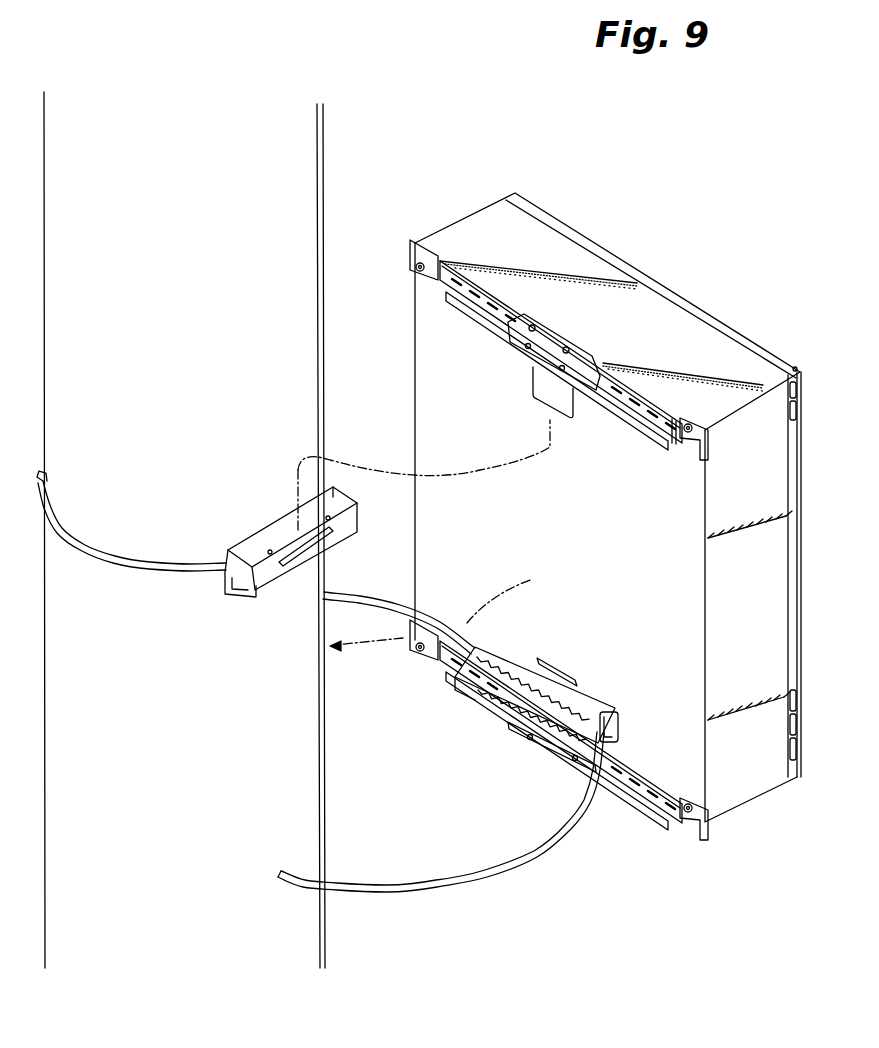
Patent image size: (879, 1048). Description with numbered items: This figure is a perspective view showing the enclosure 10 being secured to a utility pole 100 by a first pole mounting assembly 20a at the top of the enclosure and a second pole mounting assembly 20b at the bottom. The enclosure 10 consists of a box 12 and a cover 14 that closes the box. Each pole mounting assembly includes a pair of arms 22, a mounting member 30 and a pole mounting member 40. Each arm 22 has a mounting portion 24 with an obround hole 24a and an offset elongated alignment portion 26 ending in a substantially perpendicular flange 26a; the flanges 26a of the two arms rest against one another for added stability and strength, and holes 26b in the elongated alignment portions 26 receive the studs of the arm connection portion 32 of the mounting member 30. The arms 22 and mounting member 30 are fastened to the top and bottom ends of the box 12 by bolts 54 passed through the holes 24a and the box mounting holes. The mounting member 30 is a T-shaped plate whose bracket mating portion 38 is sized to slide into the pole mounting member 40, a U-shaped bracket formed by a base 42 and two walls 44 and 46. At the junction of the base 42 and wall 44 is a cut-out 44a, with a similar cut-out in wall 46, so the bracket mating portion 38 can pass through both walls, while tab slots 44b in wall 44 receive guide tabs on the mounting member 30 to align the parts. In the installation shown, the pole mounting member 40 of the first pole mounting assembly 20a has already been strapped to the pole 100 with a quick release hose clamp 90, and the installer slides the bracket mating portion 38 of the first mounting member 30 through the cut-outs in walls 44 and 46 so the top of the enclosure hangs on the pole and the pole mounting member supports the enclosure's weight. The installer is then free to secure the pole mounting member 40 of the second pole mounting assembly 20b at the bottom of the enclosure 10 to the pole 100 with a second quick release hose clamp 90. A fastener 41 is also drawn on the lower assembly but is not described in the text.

The enclosure 10 is at (682, 238).
The box 12 is at (483, 214).
The cover 14 is at (620, 260).
The first pole mounting assembly 20a is at (478, 352).
The second pole mounting assembly 20b is at (624, 642).
The arm 22 is at (510, 285).
The mounting portion 24 is at (411, 242).
The hole 24a is at (692, 447).
The elongated alignment portion 26 is at (520, 315).
The flange 26a is at (447, 297).
The holes 26b is at (488, 300).
The mounting member 30 is at (563, 428).
The arm connection portion 32 is at (555, 340).
The bracket mating portion 38 is at (545, 398).
The pole mounting member 40 is at (265, 598).
The fastener 41 is at (590, 742).
The base 42 is at (350, 527).
The wall 44 is at (350, 495).
The cut-out 44a is at (297, 540).
The tab slots 44b is at (268, 550).
The wall 46 is at (240, 585).
The bolts 54 is at (416, 268).
The quick release hose clamp 90 is at (143, 567).
The pole 100 is at (197, 222).